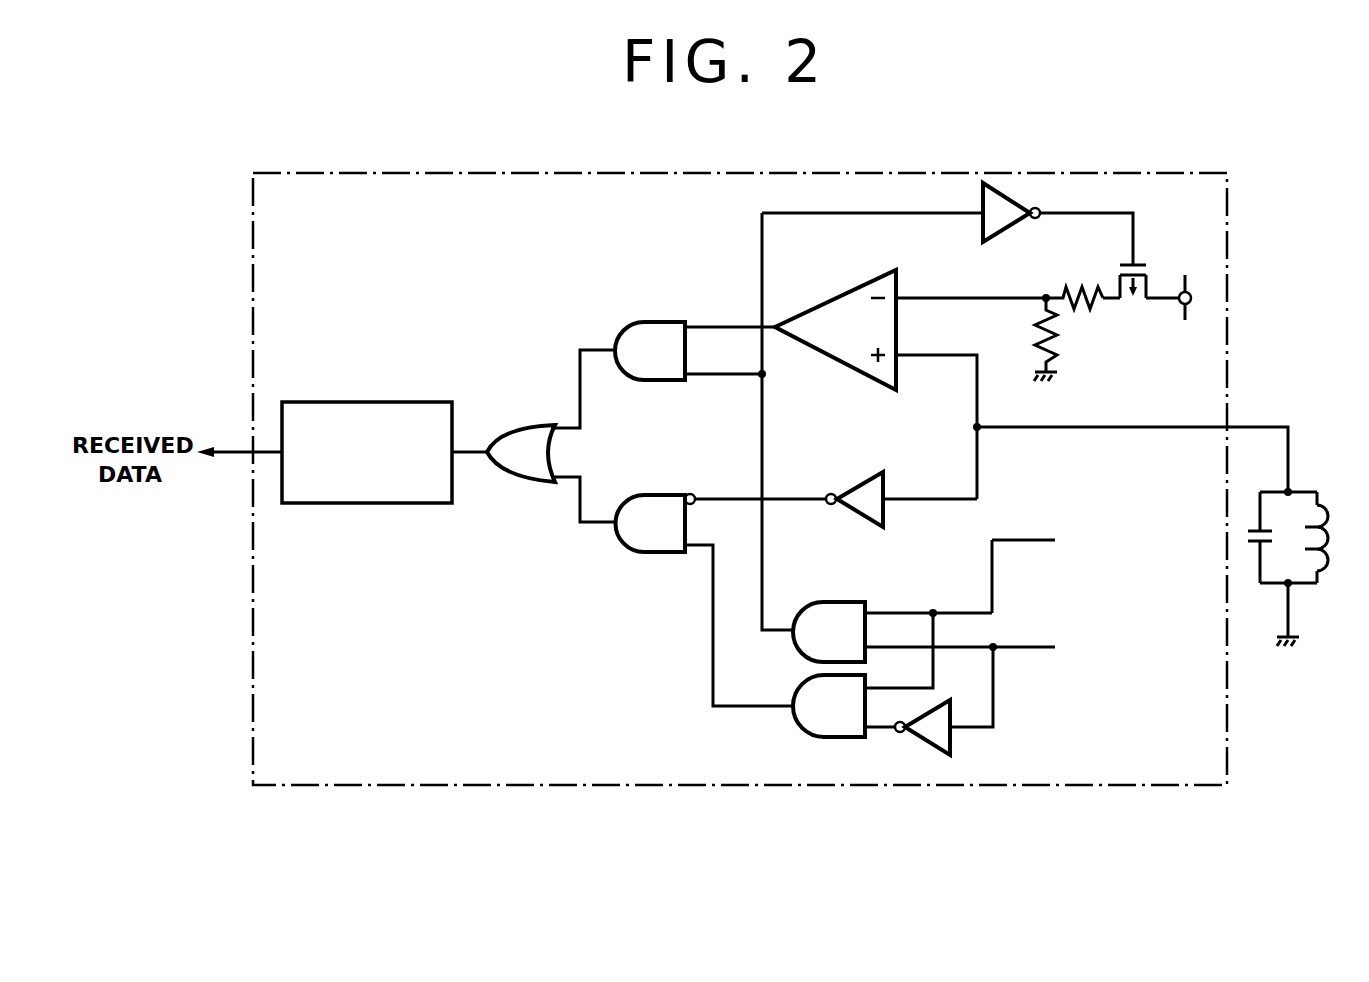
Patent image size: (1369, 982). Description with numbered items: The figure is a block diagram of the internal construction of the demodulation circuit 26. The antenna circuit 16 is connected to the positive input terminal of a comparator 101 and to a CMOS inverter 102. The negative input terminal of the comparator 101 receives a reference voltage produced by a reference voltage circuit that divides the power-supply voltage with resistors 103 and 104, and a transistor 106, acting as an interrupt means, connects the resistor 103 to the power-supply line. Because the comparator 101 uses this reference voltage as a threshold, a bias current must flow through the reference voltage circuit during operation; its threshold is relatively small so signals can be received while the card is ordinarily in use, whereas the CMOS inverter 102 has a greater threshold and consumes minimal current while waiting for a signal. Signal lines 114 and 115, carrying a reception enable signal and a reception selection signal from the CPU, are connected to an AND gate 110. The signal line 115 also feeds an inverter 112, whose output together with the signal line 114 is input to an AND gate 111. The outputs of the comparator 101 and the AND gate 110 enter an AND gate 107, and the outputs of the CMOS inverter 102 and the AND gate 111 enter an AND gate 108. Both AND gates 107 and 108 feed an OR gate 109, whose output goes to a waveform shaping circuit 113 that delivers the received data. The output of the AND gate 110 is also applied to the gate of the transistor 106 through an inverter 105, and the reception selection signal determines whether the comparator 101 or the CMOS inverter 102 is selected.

The antenna circuit 16 is at (1290, 492).
The demodulation circuit 26 is at (1233, 270).
The comparator 101 is at (833, 300).
The CMOS inverter 102 is at (862, 472).
The resistor 103 is at (1073, 290).
The resistor 104 is at (1058, 346).
The inverter 105 is at (1003, 232).
The transistor 106 is at (1146, 270).
The AND gate 107 is at (652, 320).
The AND gate 108 is at (646, 495).
The OR gate 109 is at (533, 427).
The AND gate 110 is at (840, 602).
The AND gate 111 is at (818, 738).
The inverter 112 is at (955, 742).
The waveform shaping circuit 113 is at (355, 401).
The signal line 114 is at (1017, 540).
The signal line 115 is at (1005, 647).